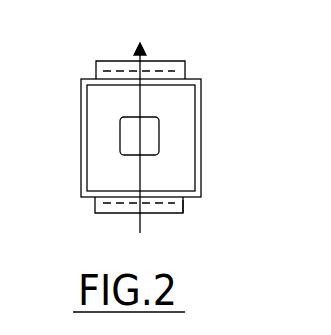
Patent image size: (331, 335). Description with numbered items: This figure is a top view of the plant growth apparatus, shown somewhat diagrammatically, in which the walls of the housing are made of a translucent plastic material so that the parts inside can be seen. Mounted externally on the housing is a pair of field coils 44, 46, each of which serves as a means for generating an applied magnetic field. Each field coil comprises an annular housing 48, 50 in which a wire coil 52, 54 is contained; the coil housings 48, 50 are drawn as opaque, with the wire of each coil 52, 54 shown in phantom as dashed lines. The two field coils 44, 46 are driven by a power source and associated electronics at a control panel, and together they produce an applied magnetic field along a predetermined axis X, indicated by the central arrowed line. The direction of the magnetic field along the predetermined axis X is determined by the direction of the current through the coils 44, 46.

The field coil 44 is at (99, 61).
The field coil 46 is at (112, 213).
The annular housing 48 is at (182, 62).
The annular housing 50 is at (173, 213).
The wire coil 52 is at (157, 72).
The wire coil 54 is at (152, 220).
The predetermined axis X is at (142, 92).